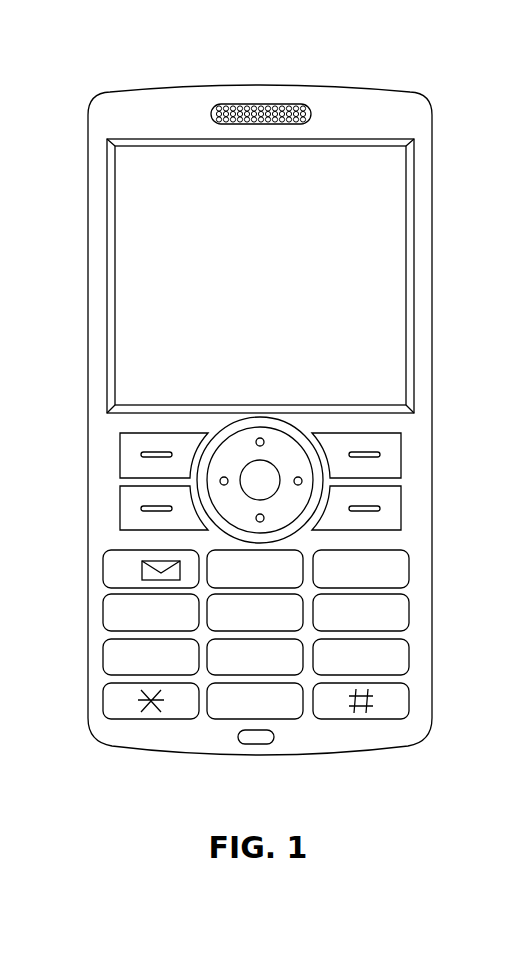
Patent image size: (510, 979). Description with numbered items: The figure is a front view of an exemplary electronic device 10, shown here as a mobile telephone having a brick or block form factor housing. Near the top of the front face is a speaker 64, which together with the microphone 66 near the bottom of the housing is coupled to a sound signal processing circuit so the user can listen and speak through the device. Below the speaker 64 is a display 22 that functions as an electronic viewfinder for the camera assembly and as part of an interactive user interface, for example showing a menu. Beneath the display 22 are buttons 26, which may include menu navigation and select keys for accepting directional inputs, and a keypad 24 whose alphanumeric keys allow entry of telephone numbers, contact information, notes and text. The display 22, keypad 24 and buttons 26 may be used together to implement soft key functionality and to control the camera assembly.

The electronic device 10 is at (98, 73).
The speaker 64 is at (258, 104).
The display 22 is at (130, 262).
The buttons 26 is at (424, 481).
The keypad 24 is at (171, 734).
The microphone 66 is at (262, 742).